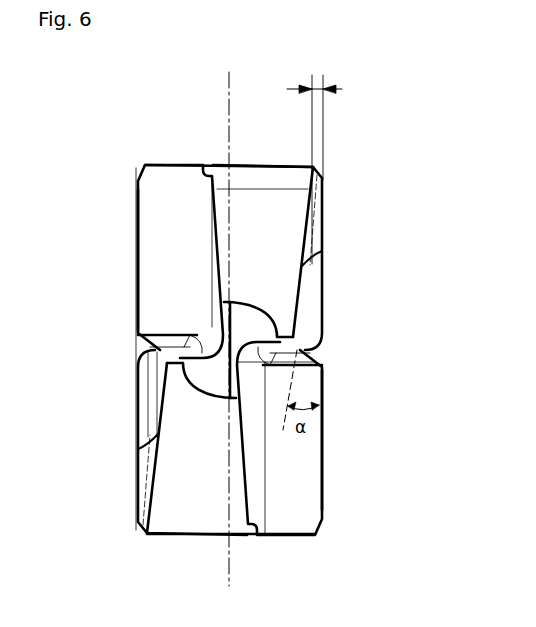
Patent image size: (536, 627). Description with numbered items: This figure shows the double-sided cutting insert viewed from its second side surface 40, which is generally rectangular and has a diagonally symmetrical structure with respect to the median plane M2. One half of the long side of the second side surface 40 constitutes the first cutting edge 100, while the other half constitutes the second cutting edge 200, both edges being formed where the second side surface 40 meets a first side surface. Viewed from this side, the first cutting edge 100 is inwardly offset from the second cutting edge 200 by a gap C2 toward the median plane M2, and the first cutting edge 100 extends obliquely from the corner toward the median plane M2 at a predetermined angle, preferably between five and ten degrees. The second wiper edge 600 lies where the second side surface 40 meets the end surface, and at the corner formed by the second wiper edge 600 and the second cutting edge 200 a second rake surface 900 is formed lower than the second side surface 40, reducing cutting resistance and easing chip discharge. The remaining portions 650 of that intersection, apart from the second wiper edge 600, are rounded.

The second side surface 40 is at (277, 203).
The first cutting edge 100 is at (308, 208).
The second cutting edge 200 is at (138, 233).
The second wiper edge 600 is at (172, 165).
The rounded portions 650 is at (248, 175).
The second rake surface 900 is at (150, 194).
The median plane M2 is at (229, 318).
The gap C2 is at (314, 159).